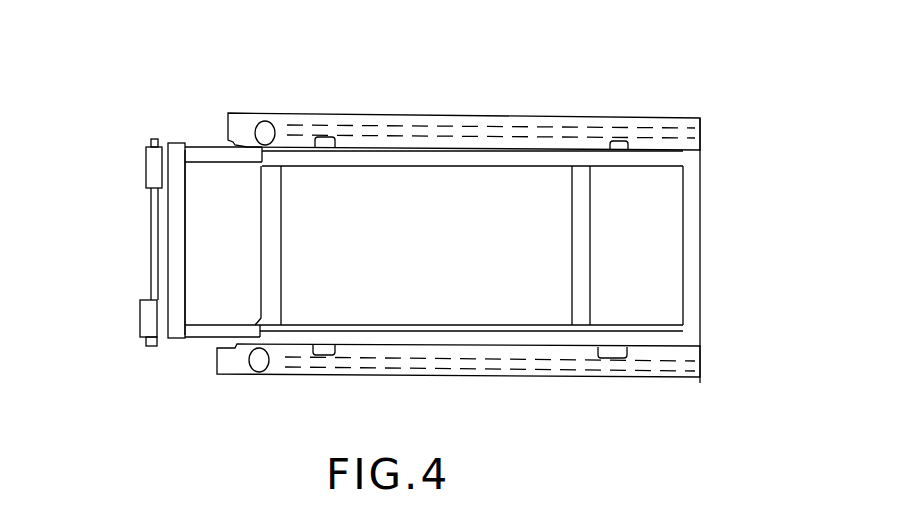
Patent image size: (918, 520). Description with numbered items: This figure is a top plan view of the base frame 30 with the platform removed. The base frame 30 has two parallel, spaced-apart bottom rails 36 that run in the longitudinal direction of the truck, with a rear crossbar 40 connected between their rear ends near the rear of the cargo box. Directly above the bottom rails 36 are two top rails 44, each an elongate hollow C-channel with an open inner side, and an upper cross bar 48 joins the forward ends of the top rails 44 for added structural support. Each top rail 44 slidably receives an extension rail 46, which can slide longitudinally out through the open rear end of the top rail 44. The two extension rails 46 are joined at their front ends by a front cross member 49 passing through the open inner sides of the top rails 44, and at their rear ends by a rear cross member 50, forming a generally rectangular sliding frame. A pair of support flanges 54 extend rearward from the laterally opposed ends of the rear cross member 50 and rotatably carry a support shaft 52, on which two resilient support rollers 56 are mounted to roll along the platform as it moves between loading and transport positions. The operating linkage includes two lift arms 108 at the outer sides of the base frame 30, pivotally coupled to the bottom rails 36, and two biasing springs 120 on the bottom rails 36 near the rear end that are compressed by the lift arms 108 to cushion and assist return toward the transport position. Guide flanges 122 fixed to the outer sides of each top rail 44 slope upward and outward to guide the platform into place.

The base frame 30 is at (690, 49).
The bottom rails 36 is at (447, 112).
The rear crossbar 40 is at (283, 254).
The top rails 44 is at (430, 170).
The extension rails 46 is at (208, 147).
The upper cross bar 48 is at (726, 241).
The front cross member 49 is at (591, 267).
The rear cross member 50 is at (187, 261).
The support shaft 52 is at (148, 234).
The support flanges 54 is at (168, 142).
The support rollers 56 is at (143, 165).
The lift arms 108 is at (628, 119).
The biasing springs 120 is at (281, 99).
The guide flanges 122 is at (340, 145).